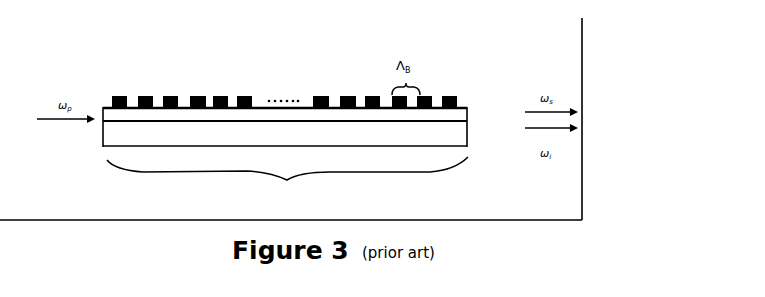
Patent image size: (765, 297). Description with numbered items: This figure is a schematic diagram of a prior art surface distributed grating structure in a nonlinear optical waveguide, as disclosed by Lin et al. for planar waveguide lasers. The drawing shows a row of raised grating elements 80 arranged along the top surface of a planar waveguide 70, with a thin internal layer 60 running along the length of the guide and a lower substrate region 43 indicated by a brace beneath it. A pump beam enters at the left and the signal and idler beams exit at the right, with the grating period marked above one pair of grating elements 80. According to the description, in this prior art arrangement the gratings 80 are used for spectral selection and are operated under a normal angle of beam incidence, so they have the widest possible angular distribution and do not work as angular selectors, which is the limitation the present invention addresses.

The grating 80 is at (268, 67).
The waveguide 70 is at (472, 117).
The core layer 60 is at (270, 168).
The substrate 43 is at (287, 182).